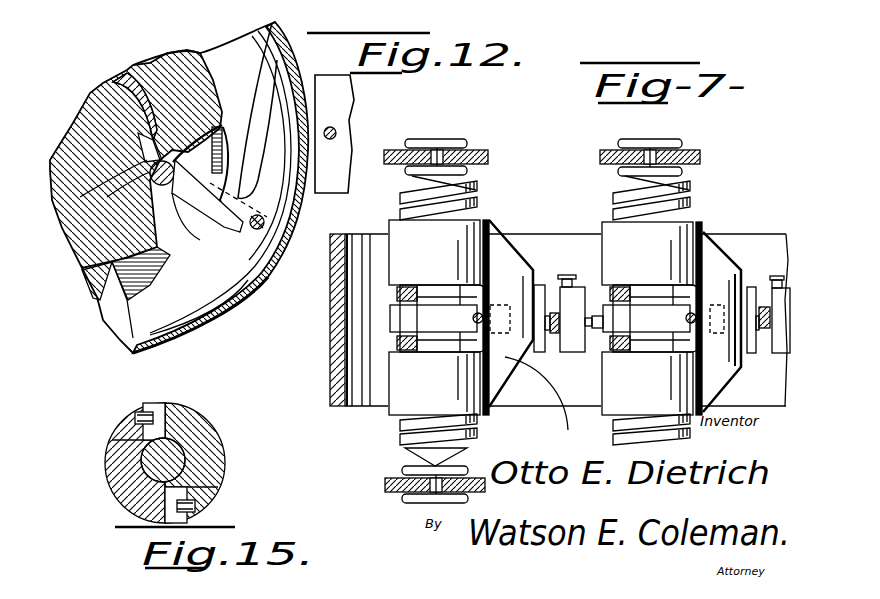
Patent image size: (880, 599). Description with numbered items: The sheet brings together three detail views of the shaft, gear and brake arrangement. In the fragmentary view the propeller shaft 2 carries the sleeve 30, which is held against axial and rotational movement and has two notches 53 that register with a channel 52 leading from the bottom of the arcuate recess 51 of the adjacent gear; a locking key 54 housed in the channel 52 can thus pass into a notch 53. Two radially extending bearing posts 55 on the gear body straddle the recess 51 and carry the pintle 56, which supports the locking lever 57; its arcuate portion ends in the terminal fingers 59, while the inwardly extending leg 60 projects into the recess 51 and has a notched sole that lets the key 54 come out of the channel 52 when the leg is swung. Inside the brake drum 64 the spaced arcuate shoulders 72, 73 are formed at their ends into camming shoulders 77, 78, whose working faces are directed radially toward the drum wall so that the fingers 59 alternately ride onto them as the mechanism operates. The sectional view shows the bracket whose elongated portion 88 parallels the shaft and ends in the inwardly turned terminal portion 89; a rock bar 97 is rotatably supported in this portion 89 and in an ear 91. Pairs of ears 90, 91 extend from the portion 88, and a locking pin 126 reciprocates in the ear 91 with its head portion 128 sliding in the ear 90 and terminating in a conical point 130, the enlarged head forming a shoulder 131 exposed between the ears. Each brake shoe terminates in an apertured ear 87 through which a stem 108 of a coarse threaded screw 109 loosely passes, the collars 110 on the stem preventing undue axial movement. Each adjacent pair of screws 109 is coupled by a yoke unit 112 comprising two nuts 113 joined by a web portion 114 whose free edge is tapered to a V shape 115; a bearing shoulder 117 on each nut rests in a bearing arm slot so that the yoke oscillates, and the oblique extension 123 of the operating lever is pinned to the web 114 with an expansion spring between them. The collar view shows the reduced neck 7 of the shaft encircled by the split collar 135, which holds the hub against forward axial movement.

In FIG. 12, the propeller shaft 2 is at (90, 120).
In FIG. 12, the sleeve 30 is at (127, 82).
In FIG. 12, the locking key 54 is at (173, 120).
In FIG. 12, the brake drum 64 is at (178, 171).
In FIG. 12, the arcuate shoulder 72 is at (250, 40).
In FIG. 12, the terminal fingers 59 is at (272, 80).
In FIG. 12, the camming shoulder 77 is at (260, 87).
In FIG. 12, the leg 60 is at (225, 186).
In FIG. 12, the locking lever 57 is at (272, 206).
In FIG. 12, the notch 53 is at (135, 164).
In FIG. 12, the channel 52 is at (100, 237).
In FIG. 12, the arcuate shoulder 73 is at (97, 277).
In FIG. 12, the camming shoulder 78 is at (103, 320).
In FIG. 12, the arcuate recess 51 is at (177, 267).
In FIG. 12, the bearing posts 55 is at (230, 230).
In FIG. 12, the pintle 56 is at (270, 272).
In FIG. 12, the rock bar 97 is at (333, 130).
In FIG. 7, the inwardly turned terminal portion 89 is at (340, 400).
In FIG. 7, the elongated portion of bracket 88 is at (353, 423).
In FIG. 7, the apertured ear 87 is at (392, 150).
In FIG. 7, the collars 110 is at (415, 139).
In FIG. 7, the stem 108 is at (440, 139).
In FIG. 7, the coarse threaded screw 109 is at (412, 210).
In FIG. 7, the nuts 113 is at (481, 222).
In FIG. 7, the shoulder 131 is at (557, 317).
In FIG. 7, the web portion 114 is at (498, 253).
In FIG. 7, the oblique extension 123 is at (470, 320).
In FIG. 7, the conical point 130 is at (527, 320).
In FIG. 7, the ear 90 is at (550, 288).
In FIG. 7, the head portion 128 is at (550, 307).
In FIG. 7, the locking pin 126 is at (592, 326).
In FIG. 7, the ear 91 is at (580, 290).
In FIG. 7, the yoke unit 112 is at (703, 235).
In FIG. 7, the bearing shoulder 117 is at (704, 255).
In FIG. 7, the V-shaped edge 115 is at (518, 380).
In FIG. 15, the split collar 135 is at (218, 462).
In FIG. 15, the neck portion 7 is at (172, 450).